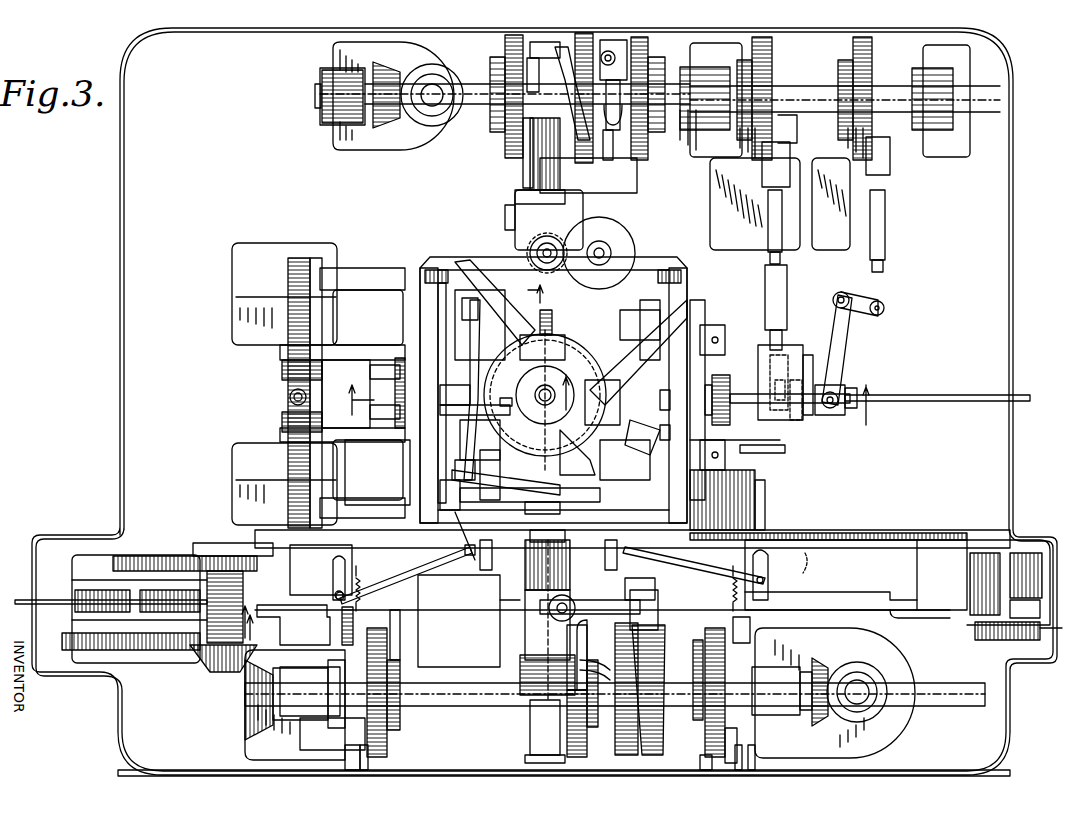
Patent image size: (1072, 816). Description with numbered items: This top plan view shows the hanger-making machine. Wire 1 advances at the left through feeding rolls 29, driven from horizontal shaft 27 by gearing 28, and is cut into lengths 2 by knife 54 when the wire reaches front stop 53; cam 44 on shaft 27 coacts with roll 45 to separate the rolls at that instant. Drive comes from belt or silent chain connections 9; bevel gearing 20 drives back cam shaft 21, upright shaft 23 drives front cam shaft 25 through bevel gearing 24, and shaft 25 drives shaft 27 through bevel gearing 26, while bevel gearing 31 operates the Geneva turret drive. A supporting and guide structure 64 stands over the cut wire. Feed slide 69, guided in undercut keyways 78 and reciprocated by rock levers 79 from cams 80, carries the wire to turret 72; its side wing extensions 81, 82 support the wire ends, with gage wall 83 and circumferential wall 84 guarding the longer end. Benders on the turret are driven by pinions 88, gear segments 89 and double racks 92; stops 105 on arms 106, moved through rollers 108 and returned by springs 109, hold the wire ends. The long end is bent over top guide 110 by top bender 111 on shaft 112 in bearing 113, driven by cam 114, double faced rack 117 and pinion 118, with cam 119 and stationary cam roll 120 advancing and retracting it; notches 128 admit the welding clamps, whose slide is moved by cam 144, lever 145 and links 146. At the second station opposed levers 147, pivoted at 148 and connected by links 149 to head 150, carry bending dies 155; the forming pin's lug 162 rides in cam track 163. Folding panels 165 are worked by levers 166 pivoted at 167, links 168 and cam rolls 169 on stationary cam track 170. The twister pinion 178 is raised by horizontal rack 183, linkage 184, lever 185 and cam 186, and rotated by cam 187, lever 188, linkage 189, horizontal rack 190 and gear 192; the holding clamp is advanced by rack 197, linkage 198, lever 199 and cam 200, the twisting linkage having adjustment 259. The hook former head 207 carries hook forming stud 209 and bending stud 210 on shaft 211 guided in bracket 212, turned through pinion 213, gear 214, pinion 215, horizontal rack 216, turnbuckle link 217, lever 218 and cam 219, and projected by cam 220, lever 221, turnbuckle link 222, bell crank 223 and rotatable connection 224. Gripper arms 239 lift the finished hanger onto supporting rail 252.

The wire 1 is at (60, 600).
The predetermined lengths 2 is at (811, 561).
The belt or silent chain connections 9 is at (253, 629).
The bevel gearing 20 is at (400, 120).
The horizontal cam shaft 21 is at (485, 108).
The upright shaft 23 is at (872, 690).
The bevel gearing 24 is at (835, 672).
The horizontal cam shaft 25 is at (442, 704).
The bevel gearing 26 is at (245, 690).
The horizontal shaft 27 is at (220, 672).
The gearing 28 is at (240, 571).
The wire feeding rolls 29 is at (118, 598).
The bevel gearing 31 is at (450, 350).
The cam 44 is at (212, 556).
The roll 45 is at (188, 556).
The front stop 53 is at (1015, 600).
The knife 54 is at (298, 618).
The supporting and guide structure 64 is at (920, 623).
The feed slide 69 is at (492, 575).
The turret 72 is at (463, 520).
The undercut keyways 78 is at (758, 512).
The rock levers 79 is at (368, 760).
The cams 80 is at (358, 758).
The side wing extension 81 is at (321, 572).
The side wing extension 82 is at (870, 548).
The gage wall 83 is at (830, 533).
The circumferential wall 84 is at (967, 575).
The pinions 88 is at (438, 268).
The gear segments 89 is at (446, 320).
The double vertically sliding racks 92 is at (540, 508).
The stops 105 is at (480, 556).
The arms 106 is at (418, 568).
The rollers 108 is at (463, 548).
The springs 109 is at (546, 588).
The top guide 110 is at (640, 372).
The top bender 111 is at (565, 538).
The shaft 112 is at (535, 560).
The bearing 113 is at (528, 640).
The cam 114 is at (662, 655).
The double faced rack 117 is at (568, 598).
The wide faced pinion portion 118 is at (535, 610).
The cam 119 is at (520, 672).
The stationary cam roll 120 is at (585, 665).
The notches 128 is at (632, 425).
The cam 144 is at (577, 755).
The lever 145 is at (530, 762).
The links 146 is at (540, 732).
The opposed levers 147 is at (372, 290).
The pivot 148 is at (290, 292).
The links 149 is at (288, 372).
The head 150 is at (288, 398).
The bending dies 155 is at (385, 370).
The transverse lug or roll 162 is at (462, 368).
The cam track 163 is at (540, 424).
The folding panel 165 is at (485, 258).
The lever 166 is at (472, 360).
The pivot 167 is at (580, 468).
The link 168 is at (465, 480).
The cam roll 169 is at (500, 400).
The stationary cam track 170 is at (545, 395).
The pinion 178 is at (535, 265).
The horizontal rack 183 is at (562, 150).
The linkage 184 is at (600, 166).
The lever 185 is at (560, 47).
The cam 186 is at (585, 35).
The cam 187 is at (645, 40).
The lever 188 is at (614, 42).
The linkage 189 is at (614, 118).
The horizontal rack 190 is at (610, 160).
The gear 192 is at (584, 250).
The rack 197 is at (530, 145).
The linkage 198 is at (540, 80).
The lever 199 is at (540, 45).
The cam 200 is at (506, 150).
The head 207 is at (712, 368).
The hook forming stud 209 is at (668, 432).
The bending stud 210 is at (670, 395).
The shaft 211 is at (750, 404).
The bracket 212 is at (795, 368).
The pinion 213 is at (795, 415).
The gear 214 is at (806, 350).
The pinion 215 is at (792, 359).
The horizontal rack 216 is at (768, 330).
The turnbuckle link 217 is at (768, 228).
The lever 218 is at (770, 160).
The cam 219 is at (770, 75).
The cam 220 is at (870, 70).
The lever 221 is at (890, 160).
The turnbuckle link 222 is at (885, 235).
The bell crank 223 is at (850, 330).
The rotatable connection 224 is at (842, 415).
The gripper arms 239 is at (715, 325).
The supporting rail or rod 252 is at (935, 402).
The adjustment 259 is at (615, 58).